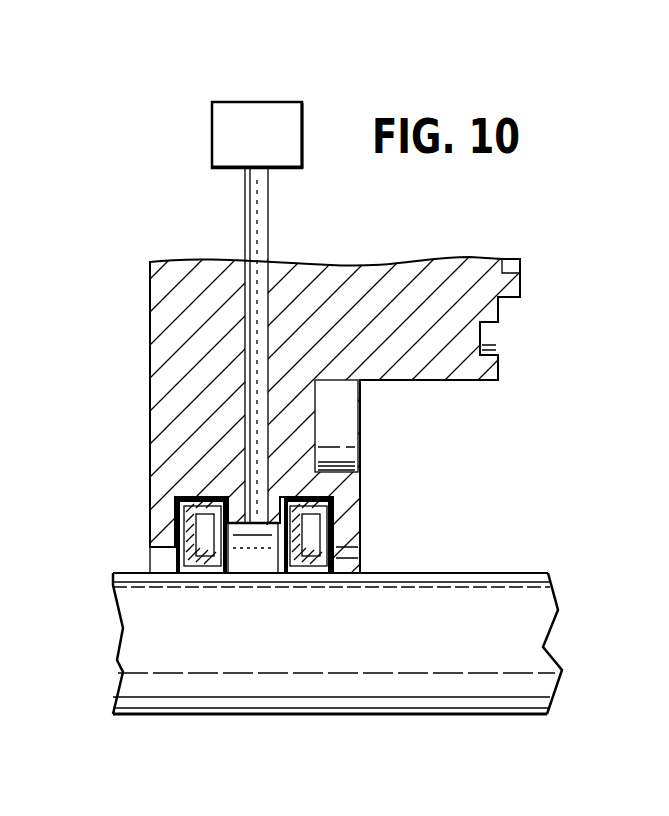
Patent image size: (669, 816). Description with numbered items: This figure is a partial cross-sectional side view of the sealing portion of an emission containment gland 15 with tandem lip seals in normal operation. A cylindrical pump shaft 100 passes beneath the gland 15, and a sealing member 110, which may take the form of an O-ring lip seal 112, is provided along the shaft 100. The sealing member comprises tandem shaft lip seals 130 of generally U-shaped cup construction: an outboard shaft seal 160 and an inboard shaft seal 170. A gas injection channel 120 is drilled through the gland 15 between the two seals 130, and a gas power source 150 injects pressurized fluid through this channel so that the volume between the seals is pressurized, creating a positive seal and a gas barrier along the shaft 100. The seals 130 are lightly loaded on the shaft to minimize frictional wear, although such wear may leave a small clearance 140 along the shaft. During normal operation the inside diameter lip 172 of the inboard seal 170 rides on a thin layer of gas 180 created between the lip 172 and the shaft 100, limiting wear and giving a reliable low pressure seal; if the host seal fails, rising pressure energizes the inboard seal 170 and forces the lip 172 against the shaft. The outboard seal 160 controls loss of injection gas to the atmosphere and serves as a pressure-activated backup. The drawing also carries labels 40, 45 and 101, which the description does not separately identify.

The emission containment gland 15 is at (346, 284).
The gas injection channel 120 is at (243, 261).
The gas power source 150 is at (280, 117).
The chamber 40 is at (504, 468).
The chamber 45 is at (480, 407).
The sealing member 110 is at (158, 558).
The O-ring lip seal 112 is at (346, 613).
The tandem shaft lip seals 130 is at (346, 613).
The outboard shaft seal 160 is at (207, 573).
The inboard shaft seal 170 is at (435, 514).
The inside diameter lip 172 is at (395, 535).
The clearance 140 is at (338, 572).
The thin layer of gas 180 is at (285, 572).
The pump shaft 100 is at (383, 670).
The plate bottom surface 101 is at (333, 716).